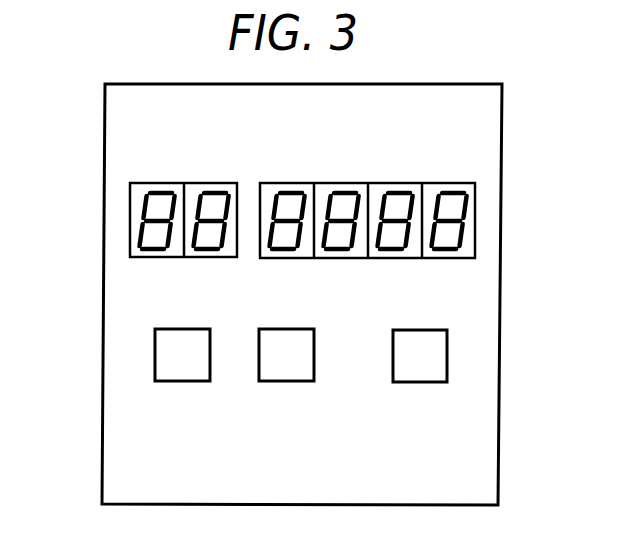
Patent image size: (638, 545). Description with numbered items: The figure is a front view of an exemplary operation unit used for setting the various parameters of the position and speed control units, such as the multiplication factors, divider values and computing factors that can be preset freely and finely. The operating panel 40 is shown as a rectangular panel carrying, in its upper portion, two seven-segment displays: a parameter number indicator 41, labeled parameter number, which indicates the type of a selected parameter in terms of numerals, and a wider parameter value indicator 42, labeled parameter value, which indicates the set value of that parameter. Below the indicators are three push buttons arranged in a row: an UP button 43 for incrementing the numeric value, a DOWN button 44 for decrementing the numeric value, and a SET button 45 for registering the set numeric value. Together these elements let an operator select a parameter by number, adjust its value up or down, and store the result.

The operating panel 40 is at (502, 133).
The parameter number indicator 41 is at (130, 212).
The parameter value indicator 42 is at (475, 206).
The UP button 43 is at (155, 358).
The DOWN button 44 is at (293, 381).
The SET button 45 is at (447, 350).